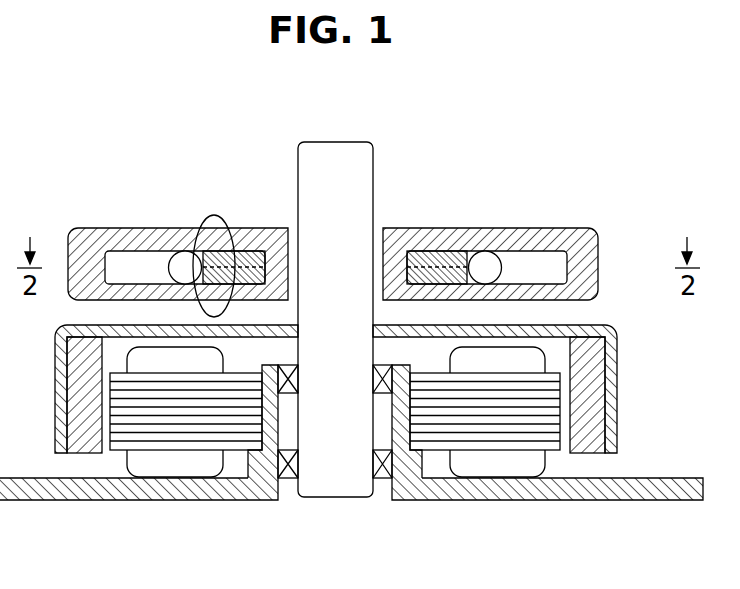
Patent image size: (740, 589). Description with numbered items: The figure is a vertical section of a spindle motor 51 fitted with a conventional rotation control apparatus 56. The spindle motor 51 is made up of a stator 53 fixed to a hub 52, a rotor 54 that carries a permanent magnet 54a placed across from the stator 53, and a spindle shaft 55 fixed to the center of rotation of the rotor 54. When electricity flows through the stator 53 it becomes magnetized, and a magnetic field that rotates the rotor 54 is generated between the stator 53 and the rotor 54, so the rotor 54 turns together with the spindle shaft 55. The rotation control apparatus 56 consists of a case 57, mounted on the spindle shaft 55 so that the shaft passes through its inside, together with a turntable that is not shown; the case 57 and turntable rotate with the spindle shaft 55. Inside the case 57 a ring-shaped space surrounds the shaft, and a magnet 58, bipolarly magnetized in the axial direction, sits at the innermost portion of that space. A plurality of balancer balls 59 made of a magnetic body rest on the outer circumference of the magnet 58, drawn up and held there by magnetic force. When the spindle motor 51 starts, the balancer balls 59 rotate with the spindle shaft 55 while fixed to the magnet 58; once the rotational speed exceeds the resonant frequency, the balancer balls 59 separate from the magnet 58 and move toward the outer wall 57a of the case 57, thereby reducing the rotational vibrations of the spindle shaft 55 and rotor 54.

The spindle motor 51 is at (387, 394).
The hub 52 is at (495, 495).
The stator 53 is at (550, 443).
The rotor 54 is at (616, 382).
The permanent magnet 54a is at (597, 423).
The spindle shaft 55 is at (353, 142).
The rotation control apparatus 56 is at (365, 241).
The case 57 is at (365, 236).
The outer wall 57a is at (113, 251).
The magnet 58 is at (432, 251).
The balancer balls 59 is at (180, 251).